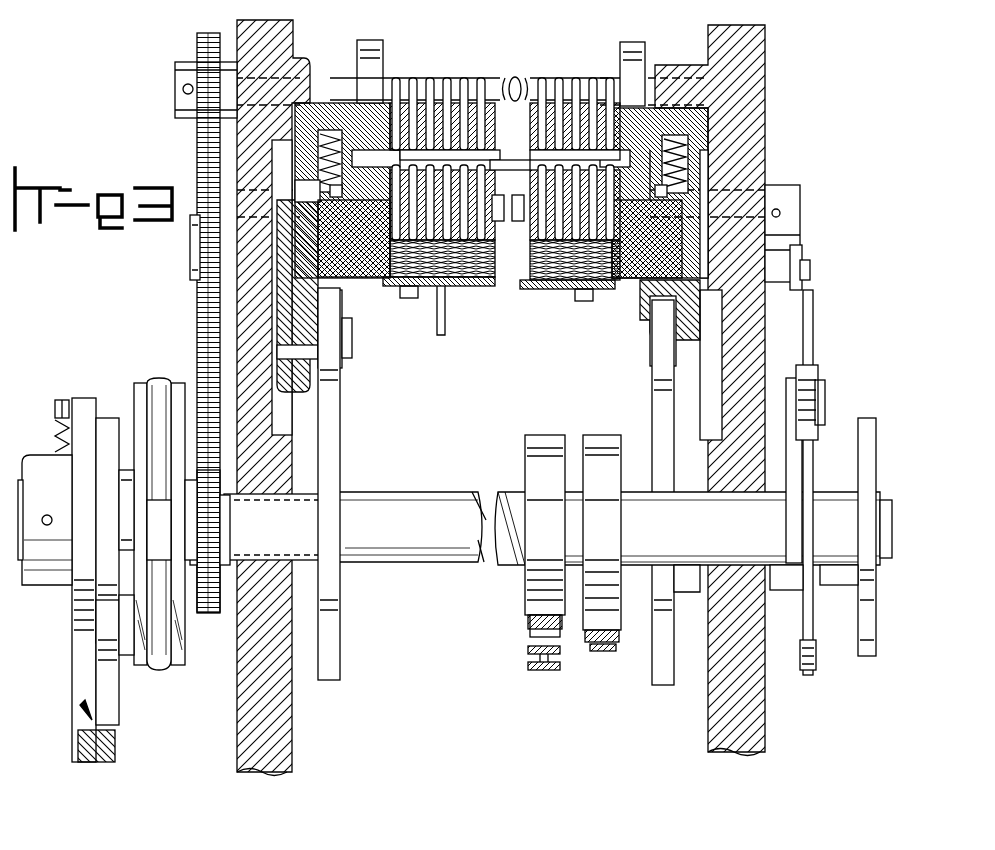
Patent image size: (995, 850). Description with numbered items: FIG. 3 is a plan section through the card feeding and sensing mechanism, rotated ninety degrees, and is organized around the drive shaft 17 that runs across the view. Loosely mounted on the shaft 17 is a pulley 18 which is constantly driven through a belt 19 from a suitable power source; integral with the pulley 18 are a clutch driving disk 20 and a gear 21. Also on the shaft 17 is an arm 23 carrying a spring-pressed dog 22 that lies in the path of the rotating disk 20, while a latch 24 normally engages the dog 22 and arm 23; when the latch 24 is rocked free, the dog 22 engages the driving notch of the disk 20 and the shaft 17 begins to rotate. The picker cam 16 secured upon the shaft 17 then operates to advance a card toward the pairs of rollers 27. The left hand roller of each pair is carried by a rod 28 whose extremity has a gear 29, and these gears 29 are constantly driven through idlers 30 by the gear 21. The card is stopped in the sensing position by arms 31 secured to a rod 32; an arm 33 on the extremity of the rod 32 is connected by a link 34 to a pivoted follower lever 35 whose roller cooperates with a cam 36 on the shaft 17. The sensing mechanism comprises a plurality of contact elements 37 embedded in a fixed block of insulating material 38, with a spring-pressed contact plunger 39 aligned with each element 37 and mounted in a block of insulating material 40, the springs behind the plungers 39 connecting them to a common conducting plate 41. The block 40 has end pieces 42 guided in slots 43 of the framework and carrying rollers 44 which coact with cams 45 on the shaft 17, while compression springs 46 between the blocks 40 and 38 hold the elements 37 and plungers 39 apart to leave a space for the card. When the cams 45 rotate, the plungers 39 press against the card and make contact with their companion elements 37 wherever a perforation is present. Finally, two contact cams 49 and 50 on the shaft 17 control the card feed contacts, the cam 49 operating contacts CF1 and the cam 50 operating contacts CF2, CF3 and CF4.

The picker cam 16 is at (866, 420).
The shaft 17 is at (432, 560).
The pulley 18 is at (158, 380).
The belt 19 is at (163, 660).
The clutch driving disk 20 is at (104, 418).
The gear 21 is at (206, 615).
The spring-pressed dog 22 is at (106, 700).
The arm 23 is at (80, 612).
The latch 24 is at (112, 752).
The rollers 27 is at (390, 30).
The rod 28 is at (516, 82).
The gear 29 is at (198, 40).
The idlers 30 is at (206, 256).
The arms 31 is at (548, 157).
The rod 32 is at (517, 222).
The arm 33 is at (805, 272).
The link 34 is at (808, 338).
The follower lever 35 is at (786, 382).
The cam 36 is at (806, 676).
The contact elements 37 is at (440, 80).
The block of insulating material 38 is at (665, 108).
The contact plunger 39 is at (526, 170).
The block of insulating material 40 is at (628, 292).
The conducting plate 41 is at (560, 290).
The end pieces 42 is at (345, 300).
The slots 43 is at (280, 412).
The rollers 44 is at (352, 356).
The cams 45 is at (340, 466).
The compression springs 46 is at (318, 100).
The contact cam 49 is at (590, 446).
The contact cam 50 is at (532, 446).
The contacts CF1 is at (620, 650).
The contacts CF2 is at (528, 624).
The contacts CF3 is at (528, 650).
The contacts CF4 is at (528, 668).